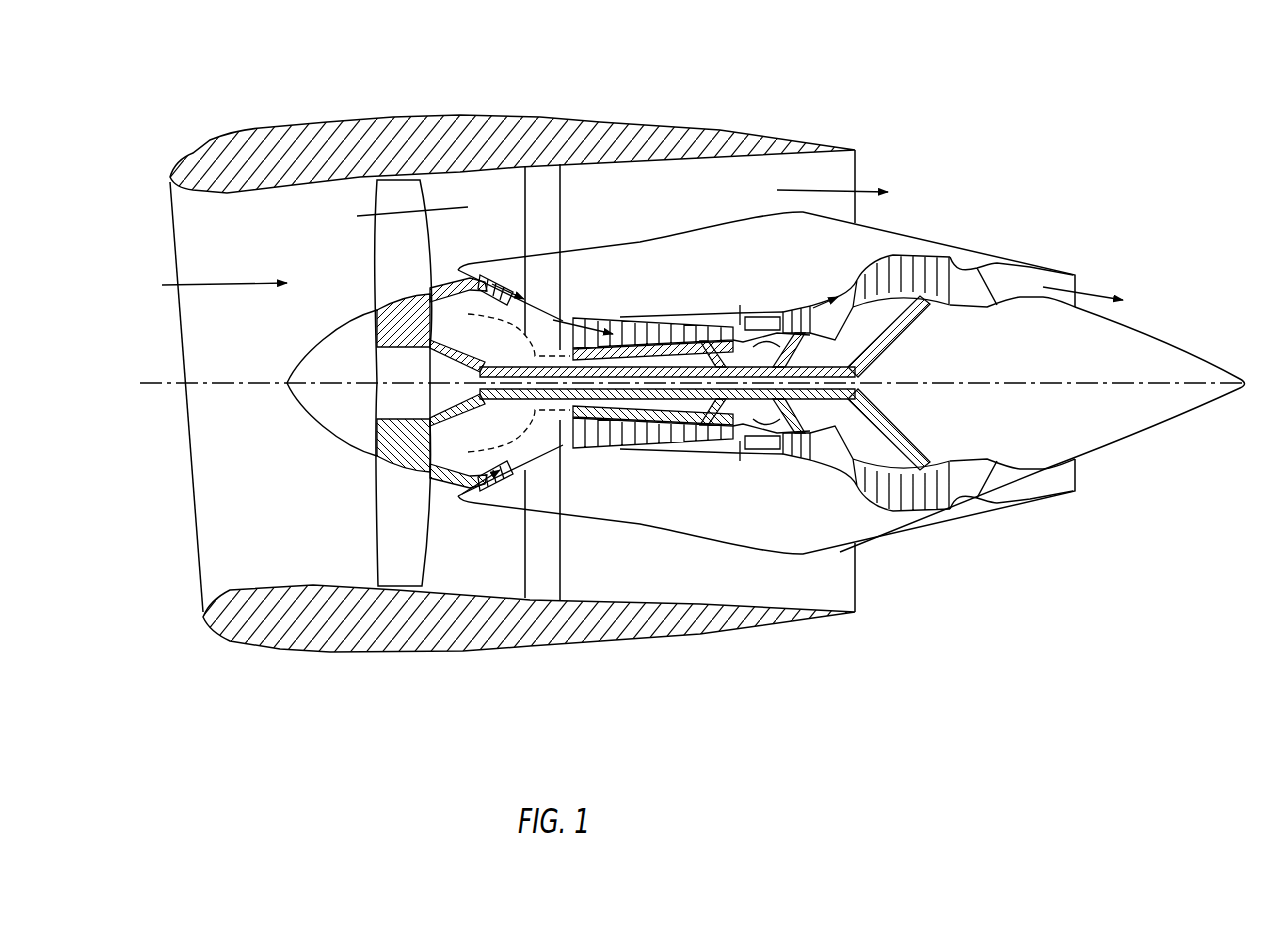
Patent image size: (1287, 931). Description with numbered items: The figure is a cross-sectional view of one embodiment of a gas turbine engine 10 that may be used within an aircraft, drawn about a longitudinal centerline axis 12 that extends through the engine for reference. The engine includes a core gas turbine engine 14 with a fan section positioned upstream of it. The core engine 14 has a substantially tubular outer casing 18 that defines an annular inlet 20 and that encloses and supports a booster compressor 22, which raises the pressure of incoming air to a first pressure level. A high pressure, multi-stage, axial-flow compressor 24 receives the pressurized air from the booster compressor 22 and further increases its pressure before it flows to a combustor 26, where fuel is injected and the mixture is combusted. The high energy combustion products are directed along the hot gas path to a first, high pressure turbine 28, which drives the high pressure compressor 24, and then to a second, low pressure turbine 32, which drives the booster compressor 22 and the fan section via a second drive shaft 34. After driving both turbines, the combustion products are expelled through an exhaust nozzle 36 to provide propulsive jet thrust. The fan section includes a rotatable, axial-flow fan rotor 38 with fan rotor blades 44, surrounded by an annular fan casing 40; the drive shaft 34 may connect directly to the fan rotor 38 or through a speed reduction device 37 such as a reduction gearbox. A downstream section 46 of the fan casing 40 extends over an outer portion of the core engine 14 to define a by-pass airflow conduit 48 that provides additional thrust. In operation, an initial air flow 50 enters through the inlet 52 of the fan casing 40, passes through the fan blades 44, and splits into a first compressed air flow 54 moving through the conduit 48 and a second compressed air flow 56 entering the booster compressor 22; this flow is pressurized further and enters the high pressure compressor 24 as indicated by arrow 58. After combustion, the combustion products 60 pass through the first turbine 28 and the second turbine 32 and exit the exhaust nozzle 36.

The gas turbine engine 10 is at (998, 130).
The longitudinal centerline axis 12 is at (1017, 383).
The core gas turbine engine 14 is at (420, 86).
The outer casing 18 is at (717, 542).
The annular inlet 20 is at (467, 493).
The booster compressor 22 is at (530, 446).
The high pressure compressor 24 is at (590, 440).
The combustor 26 is at (757, 448).
The first turbine 28 is at (840, 445).
The second turbine 32 is at (995, 488).
The second drive shaft 34 is at (527, 363).
The exhaust nozzle 36 is at (1078, 285).
The speed reduction device 37 is at (504, 380).
The fan rotor 38 is at (425, 345).
The fan casing 40 is at (420, 650).
The fan rotor blades 44 is at (560, 197).
The downstream section 46 is at (787, 148).
The by-pass airflow conduit 48 is at (656, 210).
The initial air flow 50 is at (220, 283).
The inlet 52 is at (202, 596).
The first compressed air flow 54 is at (393, 208).
The second compressed air flow 56 is at (458, 272).
The arrow indicating air entering high pressure compressor 58 is at (600, 320).
The combustion products 60 is at (797, 304).